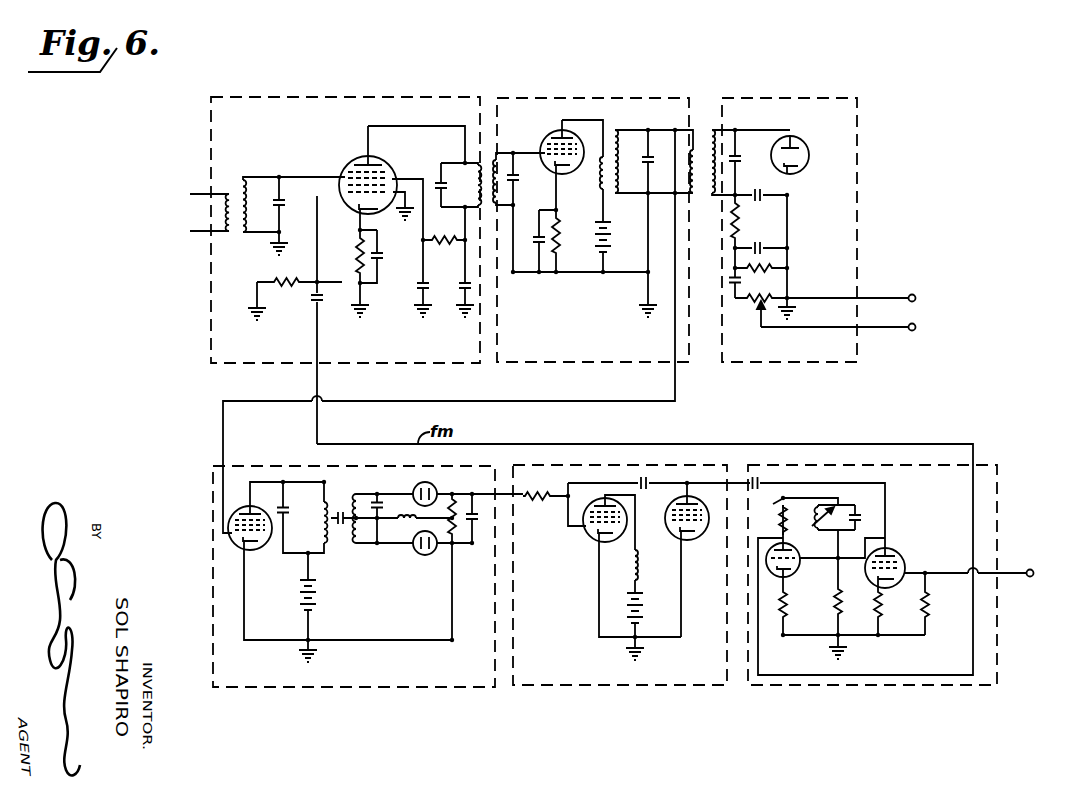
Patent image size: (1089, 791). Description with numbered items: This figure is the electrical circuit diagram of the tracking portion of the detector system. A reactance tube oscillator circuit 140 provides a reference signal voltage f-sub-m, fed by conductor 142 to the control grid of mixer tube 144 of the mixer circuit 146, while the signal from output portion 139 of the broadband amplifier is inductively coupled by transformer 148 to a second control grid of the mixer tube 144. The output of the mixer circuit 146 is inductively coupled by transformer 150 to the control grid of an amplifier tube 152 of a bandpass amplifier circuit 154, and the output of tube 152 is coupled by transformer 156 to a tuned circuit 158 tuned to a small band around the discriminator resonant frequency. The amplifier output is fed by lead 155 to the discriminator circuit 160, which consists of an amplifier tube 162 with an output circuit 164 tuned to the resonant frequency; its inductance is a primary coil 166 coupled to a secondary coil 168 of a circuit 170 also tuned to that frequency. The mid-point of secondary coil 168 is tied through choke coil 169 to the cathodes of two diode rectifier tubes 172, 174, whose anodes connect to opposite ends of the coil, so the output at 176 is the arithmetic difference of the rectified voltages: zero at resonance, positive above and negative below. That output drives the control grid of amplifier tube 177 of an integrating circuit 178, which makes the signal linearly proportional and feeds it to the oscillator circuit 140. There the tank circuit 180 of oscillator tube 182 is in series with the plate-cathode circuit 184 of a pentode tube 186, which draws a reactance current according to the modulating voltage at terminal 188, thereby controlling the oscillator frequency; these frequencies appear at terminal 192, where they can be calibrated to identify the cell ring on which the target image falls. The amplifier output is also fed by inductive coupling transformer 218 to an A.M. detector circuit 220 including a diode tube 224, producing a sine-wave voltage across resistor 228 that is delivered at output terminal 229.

The output portion 139 is at (230, 190).
The transformer 148 is at (243, 234).
The mixer tube 144 is at (349, 163).
The mixer circuit 146 is at (404, 80).
The conductor 142 is at (317, 356).
The transformer 150 is at (496, 157).
The amplifier tube 152 is at (578, 168).
The bandpass amplifier circuit 154 is at (672, 83).
The transformer 156 is at (607, 140).
The tuned circuit 158 is at (627, 183).
The lead 155 is at (675, 340).
The inductive coupling transformer 218 is at (704, 195).
The A.M. detector circuit 220 is at (875, 88).
The diode tube 224 is at (800, 173).
The resistor 228 is at (753, 305).
The output terminal 229 is at (916, 327).
The discriminator circuit 160 is at (495, 687).
The amplifier tube 162 is at (263, 552).
The output circuit 164 is at (308, 556).
The primary coil 166 is at (328, 513).
The secondary coil 168 is at (353, 494).
The choke coil 169 is at (406, 506).
The circuit 170 is at (366, 546).
The diode rectifier tube 172 is at (436, 490).
The diode rectifier tube 174 is at (428, 556).
The discriminator output 176 is at (504, 493).
The amplifier tube 177 is at (590, 536).
The integrating circuit 178 is at (727, 686).
The tank circuit 180 is at (838, 508).
The oscillator tube 182 is at (784, 580).
The plate-cathode circuit 184 is at (841, 562).
The pentode tube 186 is at (903, 556).
The terminal 188 is at (838, 558).
The terminal 192 is at (1032, 578).
The reactance tube oscillator circuit 140 is at (962, 686).